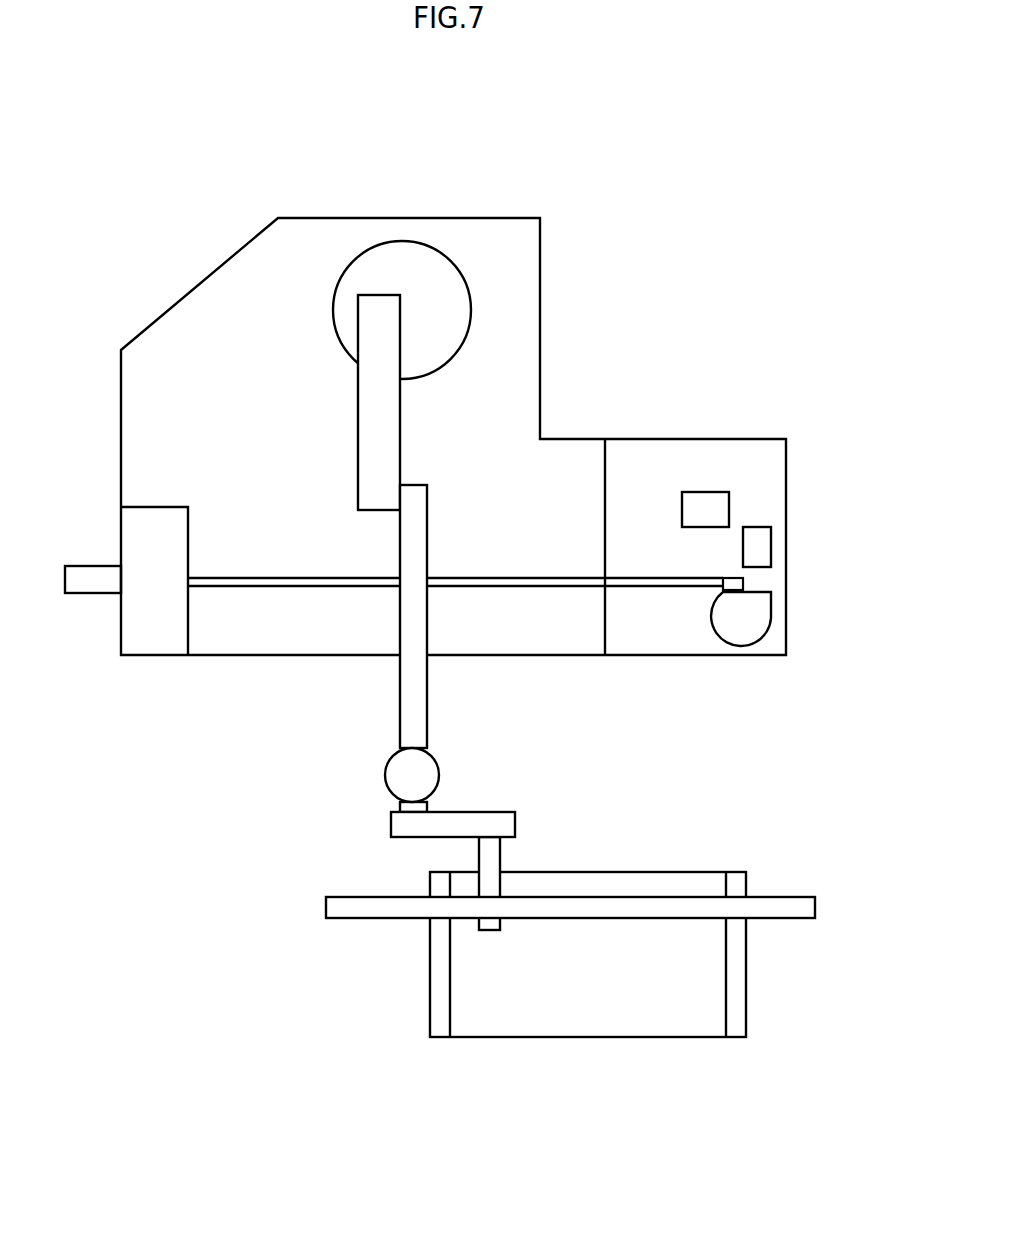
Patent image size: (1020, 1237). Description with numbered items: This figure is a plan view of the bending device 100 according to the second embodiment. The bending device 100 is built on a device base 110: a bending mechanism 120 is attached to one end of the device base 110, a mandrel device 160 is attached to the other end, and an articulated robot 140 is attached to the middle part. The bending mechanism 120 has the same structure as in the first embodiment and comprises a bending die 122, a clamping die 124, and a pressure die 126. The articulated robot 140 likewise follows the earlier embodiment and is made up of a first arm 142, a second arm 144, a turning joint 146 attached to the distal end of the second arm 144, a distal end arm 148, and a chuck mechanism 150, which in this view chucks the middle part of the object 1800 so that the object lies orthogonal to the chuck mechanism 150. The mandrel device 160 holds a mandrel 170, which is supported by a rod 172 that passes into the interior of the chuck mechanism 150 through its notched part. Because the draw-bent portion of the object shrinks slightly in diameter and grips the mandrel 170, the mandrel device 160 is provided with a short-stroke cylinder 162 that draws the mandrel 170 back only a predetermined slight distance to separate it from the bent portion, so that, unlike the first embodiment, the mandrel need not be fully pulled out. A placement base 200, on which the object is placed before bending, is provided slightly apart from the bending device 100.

The bending device 100 is at (609, 239).
The device base 110 is at (508, 384).
The bending mechanism 120 is at (712, 439).
The bending die 122 is at (742, 625).
The clamping die 124 is at (760, 550).
The pressure die 126 is at (722, 508).
The articulated robot 140 is at (428, 278).
The first arm 142 is at (377, 430).
The second arm 144 is at (408, 715).
The turning joint 146 is at (417, 775).
The distal end arm 148 is at (483, 822).
The chuck mechanism 150 is at (492, 860).
The mandrel device 160 is at (157, 637).
The cylinder 162 is at (85, 582).
The mandrel 170 is at (745, 580).
The rod 172 is at (522, 587).
The tray 1800 is at (793, 907).
The placement base 200 is at (746, 1003).